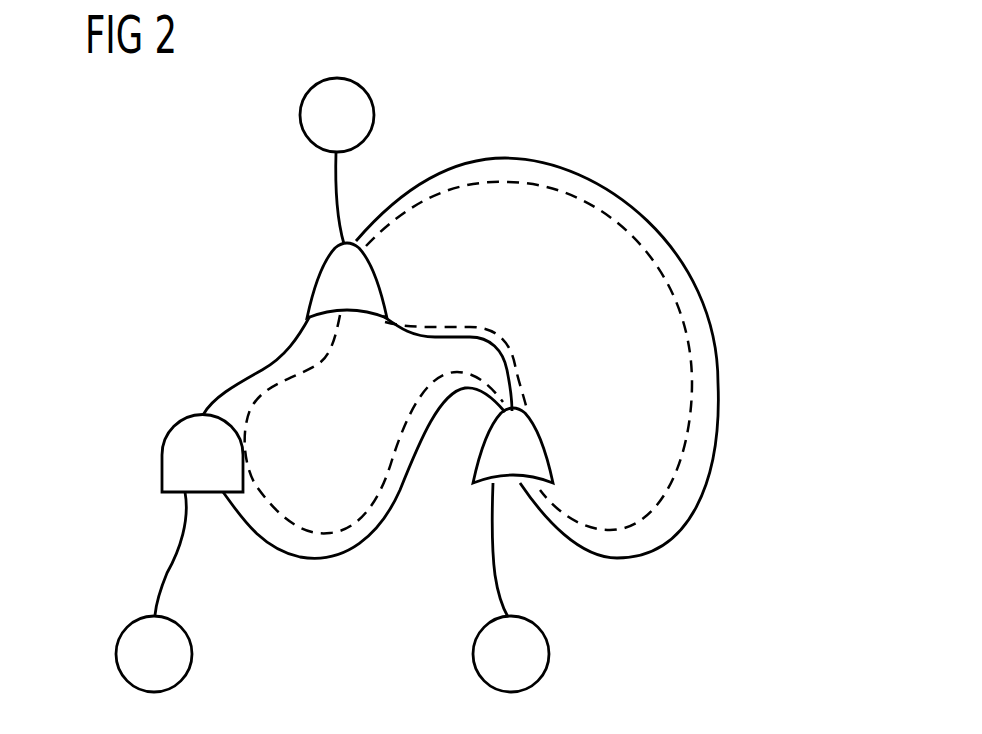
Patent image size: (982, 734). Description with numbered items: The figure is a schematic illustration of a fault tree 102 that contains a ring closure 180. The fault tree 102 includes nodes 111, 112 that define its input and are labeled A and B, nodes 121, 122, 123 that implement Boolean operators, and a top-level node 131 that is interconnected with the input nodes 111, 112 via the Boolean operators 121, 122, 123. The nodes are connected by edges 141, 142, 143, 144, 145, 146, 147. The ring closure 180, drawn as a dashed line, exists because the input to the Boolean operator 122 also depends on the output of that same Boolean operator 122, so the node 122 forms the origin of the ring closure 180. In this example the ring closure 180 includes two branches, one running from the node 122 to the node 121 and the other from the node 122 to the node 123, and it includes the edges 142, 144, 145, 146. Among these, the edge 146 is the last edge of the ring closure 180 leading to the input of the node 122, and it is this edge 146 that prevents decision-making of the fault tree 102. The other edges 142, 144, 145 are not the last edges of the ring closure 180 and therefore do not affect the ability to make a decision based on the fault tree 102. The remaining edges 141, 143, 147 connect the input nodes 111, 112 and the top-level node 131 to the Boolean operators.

The fault tree 102 is at (702, 131).
The input node 111 is at (192, 655).
The input node 112 is at (473, 653).
The Boolean operator node 121 is at (162, 462).
The Boolean operator node 122 is at (543, 450).
The Boolean operator node 123 is at (321, 282).
The top-level node 131 is at (300, 117).
The edge 141 is at (180, 545).
The edge 142 is at (322, 560).
The edge 143 is at (493, 567).
The edge 144 is at (270, 366).
The edge 145 is at (421, 338).
The edge 146 is at (520, 158).
The edge 147 is at (335, 192).
The ring closure 180 is at (672, 296).